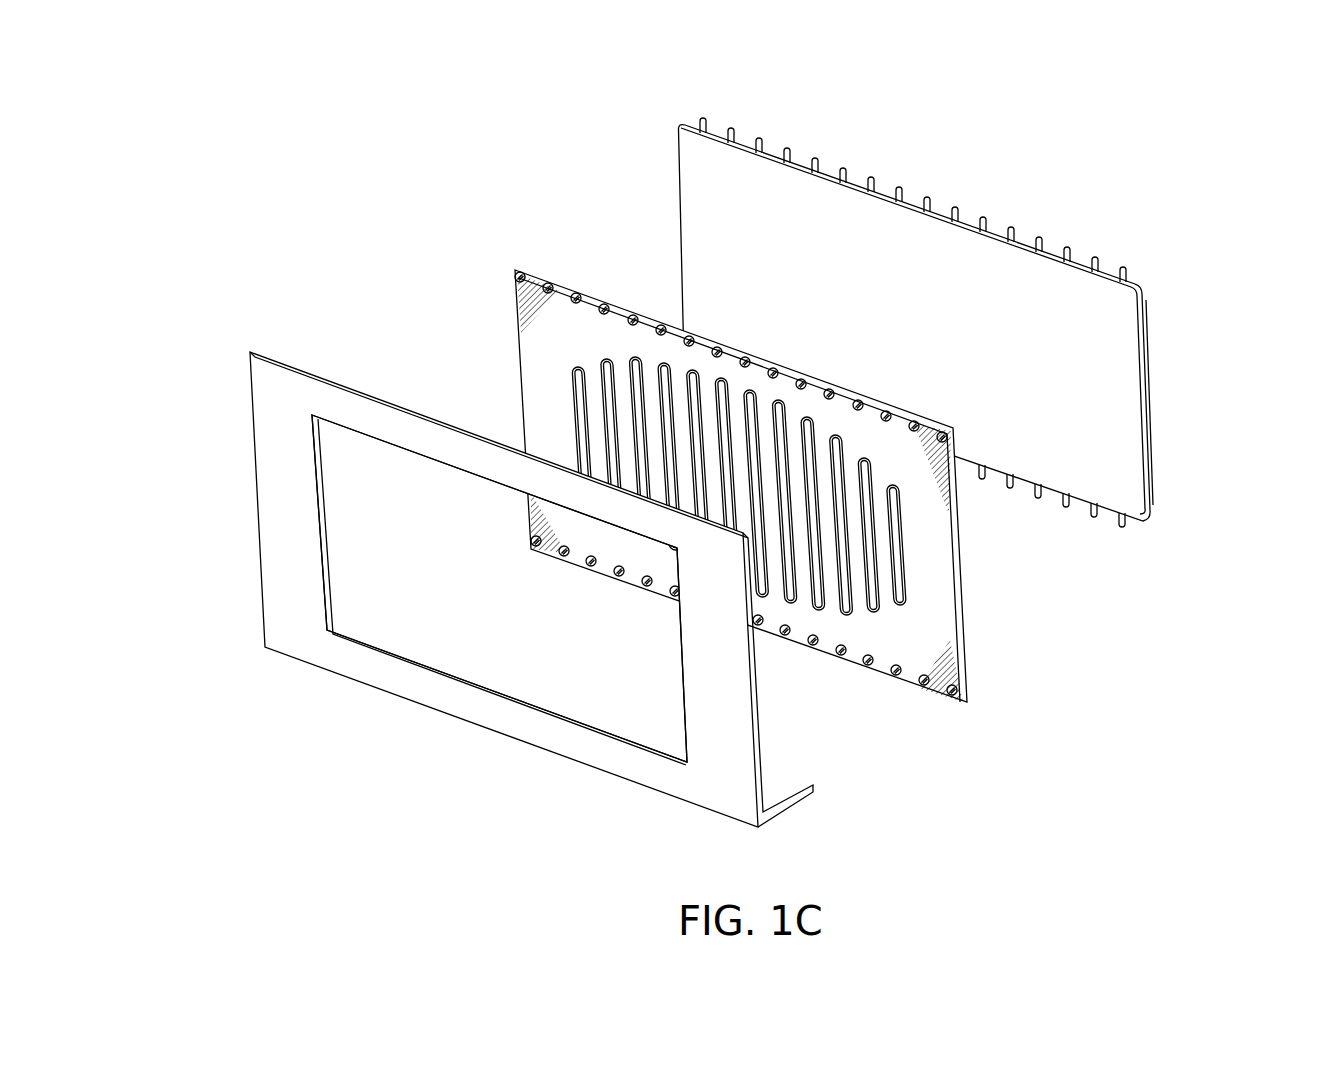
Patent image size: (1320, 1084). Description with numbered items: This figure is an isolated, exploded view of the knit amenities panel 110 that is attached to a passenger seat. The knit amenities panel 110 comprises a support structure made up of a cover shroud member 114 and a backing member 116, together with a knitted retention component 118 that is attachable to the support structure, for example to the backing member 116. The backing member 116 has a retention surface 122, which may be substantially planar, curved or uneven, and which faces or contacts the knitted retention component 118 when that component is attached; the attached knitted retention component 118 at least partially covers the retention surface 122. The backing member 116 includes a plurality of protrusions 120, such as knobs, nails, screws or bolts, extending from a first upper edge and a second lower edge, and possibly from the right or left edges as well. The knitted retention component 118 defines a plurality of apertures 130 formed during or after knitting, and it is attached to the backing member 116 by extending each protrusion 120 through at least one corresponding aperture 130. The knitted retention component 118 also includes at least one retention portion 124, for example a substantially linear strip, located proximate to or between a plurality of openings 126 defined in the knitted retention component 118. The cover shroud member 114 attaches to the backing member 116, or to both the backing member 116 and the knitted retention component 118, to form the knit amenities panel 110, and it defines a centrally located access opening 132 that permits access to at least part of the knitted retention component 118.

The knit amenities panel 110 is at (704, 444).
The cover shroud member 114 is at (497, 589).
The backing member 116 is at (930, 294).
The knitted retention component 118 is at (744, 524).
The protrusion 120 is at (983, 213).
The retention surface 122 is at (1107, 350).
The retention portion 124 is at (885, 540).
The opening 126 is at (905, 588).
The aperture 130 is at (900, 677).
The access opening 132 is at (372, 617).